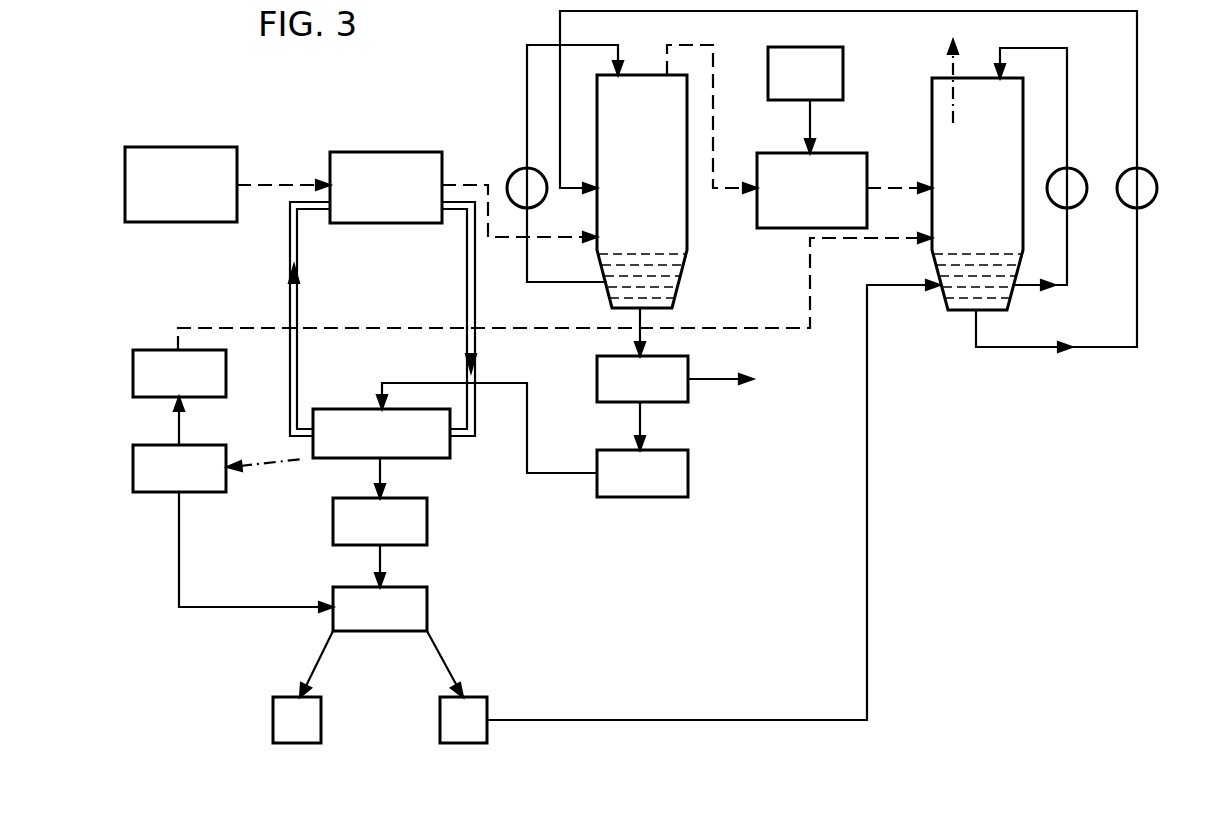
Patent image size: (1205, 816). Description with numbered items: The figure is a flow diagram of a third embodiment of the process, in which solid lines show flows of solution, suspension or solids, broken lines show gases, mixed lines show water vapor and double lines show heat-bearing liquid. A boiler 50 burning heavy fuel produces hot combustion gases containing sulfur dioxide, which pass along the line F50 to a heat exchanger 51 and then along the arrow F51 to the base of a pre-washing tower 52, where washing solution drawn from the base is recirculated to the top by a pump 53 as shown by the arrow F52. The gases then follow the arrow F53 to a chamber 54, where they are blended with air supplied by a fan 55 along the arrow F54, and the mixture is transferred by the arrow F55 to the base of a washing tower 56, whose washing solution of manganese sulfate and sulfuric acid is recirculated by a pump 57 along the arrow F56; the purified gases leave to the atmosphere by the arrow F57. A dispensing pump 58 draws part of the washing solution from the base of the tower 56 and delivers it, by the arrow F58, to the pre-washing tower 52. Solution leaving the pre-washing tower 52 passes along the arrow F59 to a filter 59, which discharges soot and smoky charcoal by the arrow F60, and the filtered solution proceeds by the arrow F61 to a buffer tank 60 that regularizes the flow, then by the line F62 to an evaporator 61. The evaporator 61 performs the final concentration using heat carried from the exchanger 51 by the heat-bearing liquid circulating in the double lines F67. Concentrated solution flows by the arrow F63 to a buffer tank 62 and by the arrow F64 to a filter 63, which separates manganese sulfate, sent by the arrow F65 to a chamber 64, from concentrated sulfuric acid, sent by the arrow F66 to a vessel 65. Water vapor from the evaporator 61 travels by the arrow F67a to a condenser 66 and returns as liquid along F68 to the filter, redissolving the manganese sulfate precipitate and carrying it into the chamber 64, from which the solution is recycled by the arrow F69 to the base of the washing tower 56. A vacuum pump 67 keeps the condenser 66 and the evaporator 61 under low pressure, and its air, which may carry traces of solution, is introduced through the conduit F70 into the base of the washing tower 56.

The boiler 50 is at (178, 170).
The heat exchanger 51 is at (382, 168).
The pre-washing tower 52 is at (667, 218).
The pump 53 is at (520, 170).
The chamber 54 is at (793, 210).
The fan 55 is at (825, 72).
The washing tower 56 is at (1007, 156).
The pump 57 is at (1080, 172).
The dispensing pump 58 is at (1150, 172).
The filter 59 is at (613, 376).
The buffer tank 60 is at (670, 476).
The evaporator 61 is at (430, 442).
The buffer tank 62 is at (410, 528).
The filter 63 is at (410, 610).
The chamber 64 is at (453, 717).
The vessel 65 is at (292, 717).
The condenser 66 is at (200, 458).
The vacuum pump 67 is at (210, 380).
The arrow F50 is at (275, 185).
The arrow F51 is at (458, 186).
The arrow F52 is at (520, 56).
The arrow F53 is at (716, 115).
The arrow F54 is at (813, 113).
The arrow F55 is at (898, 187).
The arrow F56 is at (1068, 272).
The arrow F57 is at (953, 72).
The arrow F58 is at (1138, 88).
The arrow F59 is at (640, 316).
The arrow F60 is at (715, 378).
The arrow F61 is at (642, 417).
The line F62 is at (558, 474).
The arrow F63 is at (378, 468).
The arrow F64 is at (380, 560).
The arrow F65 is at (444, 656).
The arrow F66 is at (316, 654).
The double lines F67 is at (290, 297).
The arrow F67a is at (278, 462).
The flow line F68 is at (212, 580).
The arrow F69 is at (868, 550).
The conduit F70 is at (388, 328).